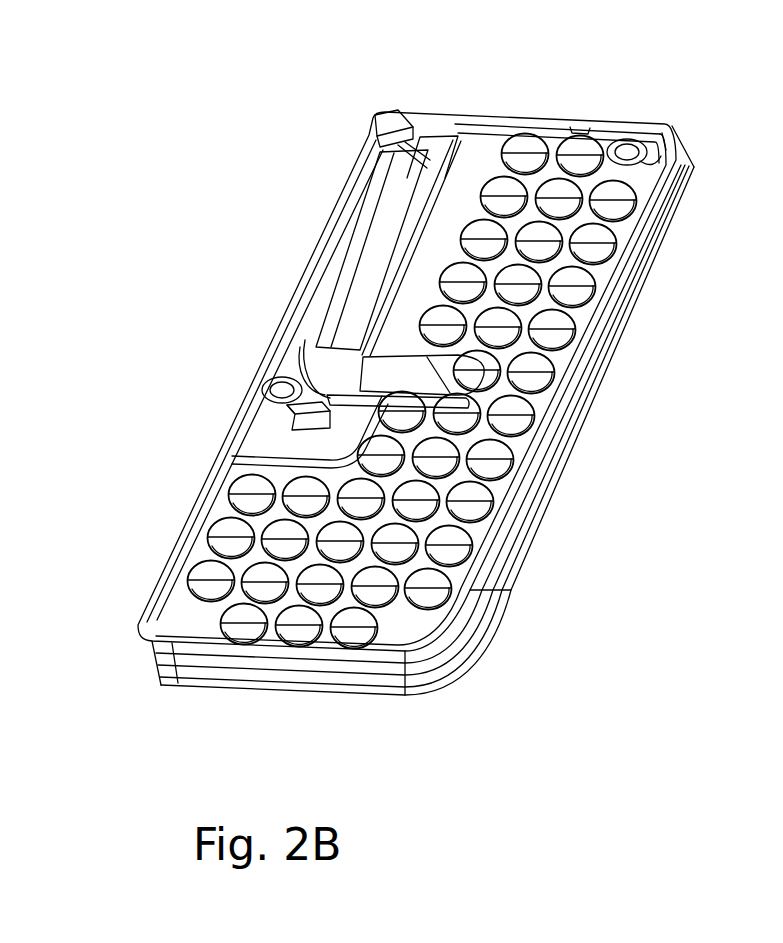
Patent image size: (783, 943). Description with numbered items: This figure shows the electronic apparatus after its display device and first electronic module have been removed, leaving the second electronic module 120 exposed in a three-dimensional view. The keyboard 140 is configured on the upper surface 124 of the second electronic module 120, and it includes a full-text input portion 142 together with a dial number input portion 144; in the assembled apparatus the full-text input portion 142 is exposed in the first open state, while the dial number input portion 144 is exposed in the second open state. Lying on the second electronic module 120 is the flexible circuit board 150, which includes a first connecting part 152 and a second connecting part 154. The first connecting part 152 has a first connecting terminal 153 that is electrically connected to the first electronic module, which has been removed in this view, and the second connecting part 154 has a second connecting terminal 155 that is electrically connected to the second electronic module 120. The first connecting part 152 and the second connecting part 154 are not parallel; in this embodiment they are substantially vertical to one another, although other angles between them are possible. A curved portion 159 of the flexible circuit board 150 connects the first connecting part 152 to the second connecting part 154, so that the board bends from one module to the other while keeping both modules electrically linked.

The second electronic module 120 is at (490, 541).
The upper surface 124 is at (664, 154).
The keyboard 140 is at (354, 636).
The full-text input portion 142 is at (579, 126).
The dial number input portion 144 is at (206, 552).
The flexible circuit board 150 is at (429, 269).
The first connecting part 152 is at (455, 400).
The first connecting terminal 153 is at (395, 333).
The second connecting part 154 is at (363, 268).
The second connecting terminal 155 is at (393, 183).
The curved portion 159 is at (300, 358).